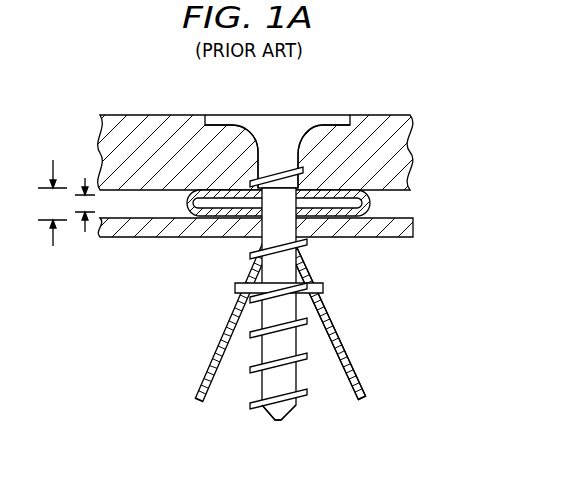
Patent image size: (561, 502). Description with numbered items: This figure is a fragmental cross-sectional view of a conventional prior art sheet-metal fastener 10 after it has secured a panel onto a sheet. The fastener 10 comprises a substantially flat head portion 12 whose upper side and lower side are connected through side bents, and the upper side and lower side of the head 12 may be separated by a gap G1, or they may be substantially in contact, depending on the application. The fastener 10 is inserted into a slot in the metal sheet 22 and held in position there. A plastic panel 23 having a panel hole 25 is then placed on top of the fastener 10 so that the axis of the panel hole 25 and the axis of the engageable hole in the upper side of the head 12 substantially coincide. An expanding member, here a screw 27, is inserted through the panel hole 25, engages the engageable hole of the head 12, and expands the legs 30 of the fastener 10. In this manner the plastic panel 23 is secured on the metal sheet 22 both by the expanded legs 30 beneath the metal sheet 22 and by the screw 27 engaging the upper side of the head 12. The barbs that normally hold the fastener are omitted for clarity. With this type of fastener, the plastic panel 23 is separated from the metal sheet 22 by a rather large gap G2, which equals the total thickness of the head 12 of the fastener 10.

The sheet-metal fastener 10 is at (194, 334).
The head portion 12 is at (420, 205).
The metal sheet 22 is at (365, 237).
The plastic panel 23 is at (408, 134).
The panel hole 25 is at (319, 132).
The screw 27 is at (273, 130).
The legs 30 is at (350, 346).
The gap G1 is at (85, 178).
The gap G2 is at (53, 160).